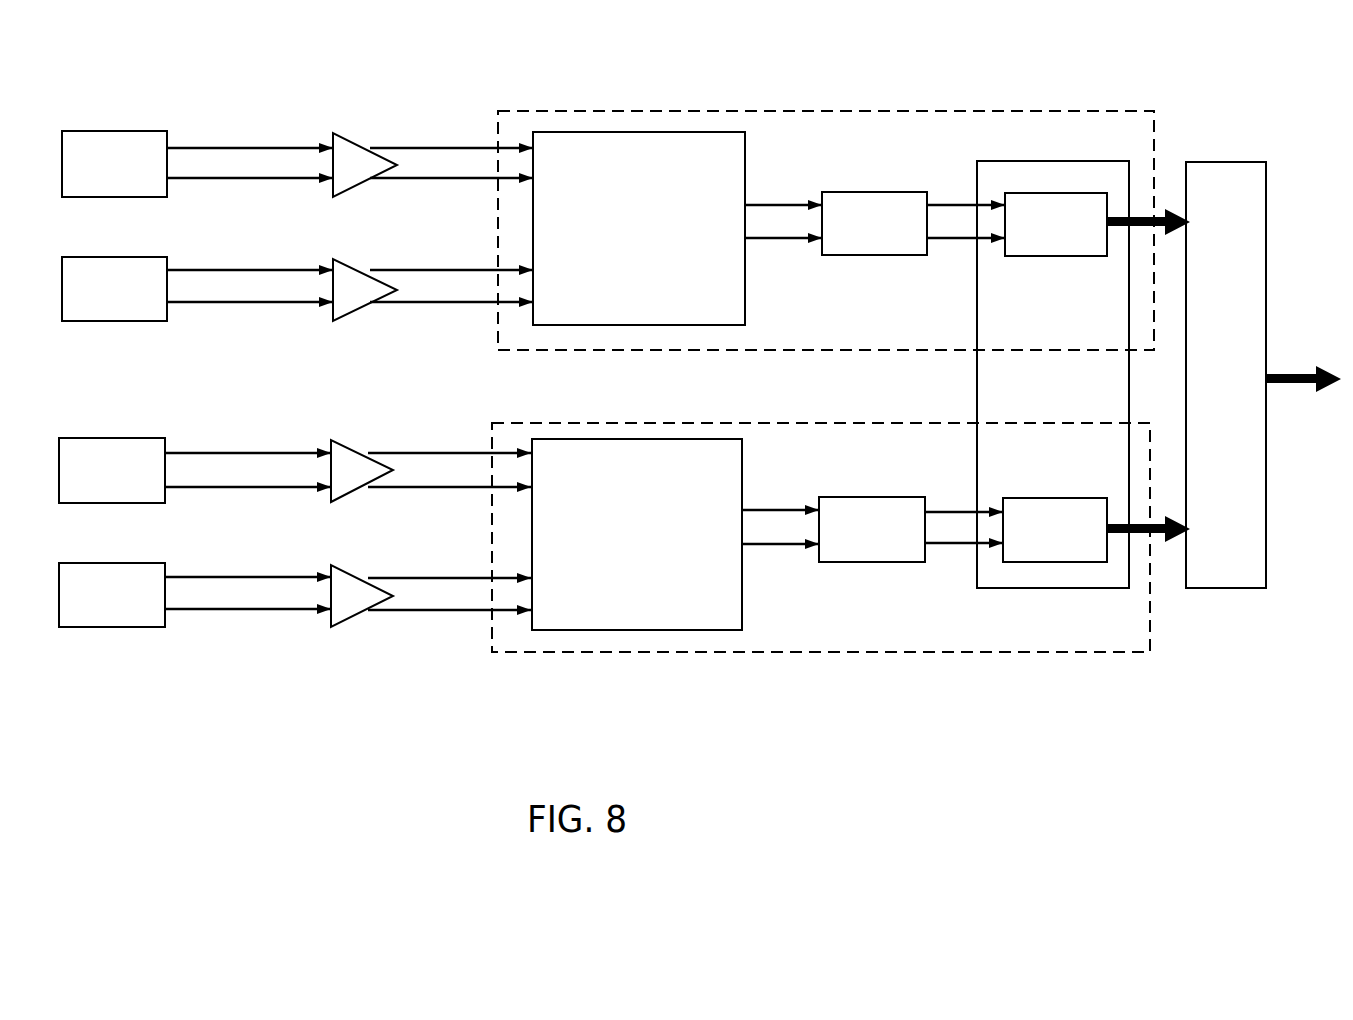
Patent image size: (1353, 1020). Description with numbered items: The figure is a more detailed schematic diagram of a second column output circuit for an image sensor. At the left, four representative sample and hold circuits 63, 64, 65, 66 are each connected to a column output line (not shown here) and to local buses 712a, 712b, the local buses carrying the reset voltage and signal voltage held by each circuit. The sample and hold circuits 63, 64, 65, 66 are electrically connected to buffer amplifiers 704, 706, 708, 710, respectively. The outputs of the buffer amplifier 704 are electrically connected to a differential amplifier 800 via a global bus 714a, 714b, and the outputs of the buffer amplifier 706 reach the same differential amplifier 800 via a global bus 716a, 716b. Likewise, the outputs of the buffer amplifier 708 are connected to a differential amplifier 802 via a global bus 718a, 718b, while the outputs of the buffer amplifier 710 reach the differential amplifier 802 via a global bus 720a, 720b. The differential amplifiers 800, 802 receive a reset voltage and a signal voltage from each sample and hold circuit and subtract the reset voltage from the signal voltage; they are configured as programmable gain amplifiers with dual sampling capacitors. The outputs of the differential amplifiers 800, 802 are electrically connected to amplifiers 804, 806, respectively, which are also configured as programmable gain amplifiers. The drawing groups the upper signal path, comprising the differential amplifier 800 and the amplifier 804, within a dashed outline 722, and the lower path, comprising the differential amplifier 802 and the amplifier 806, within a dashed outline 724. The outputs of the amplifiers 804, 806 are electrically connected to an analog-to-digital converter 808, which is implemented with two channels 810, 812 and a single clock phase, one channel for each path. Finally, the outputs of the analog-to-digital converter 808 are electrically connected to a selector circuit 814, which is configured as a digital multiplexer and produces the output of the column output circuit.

The sample and hold circuit 63 is at (100, 177).
The sample and hold circuit 64 is at (100, 304).
The sample and hold circuit 65 is at (98, 485).
The sample and hold circuit 66 is at (98, 610).
The buffer amplifier 704 is at (352, 160).
The buffer amplifier 706 is at (352, 283).
The buffer amplifier 708 is at (350, 470).
The buffer amplifier 710 is at (348, 588).
The local bus 712a is at (270, 147).
The local bus 712b is at (212, 178).
The global bus 714a is at (467, 147).
The global bus 714b is at (422, 178).
The global bus 716a is at (420, 271).
The global bus 716b is at (473, 303).
The global bus 718a is at (470, 453).
The global bus 718b is at (420, 487).
The global bus 720a is at (415, 579).
The global bus 720b is at (468, 611).
The first processing module 722 is at (822, 110).
The second processing module 724 is at (758, 653).
The differential amplifier 800 is at (618, 245).
The differential amplifier 802 is at (616, 553).
The amplifier 804 is at (854, 243).
The amplifier 806 is at (851, 545).
The analog-to-digital converter 808 is at (977, 385).
The channel 810 is at (1035, 243).
The channel 812 is at (1034, 545).
The selector circuit 814 is at (1205, 393).